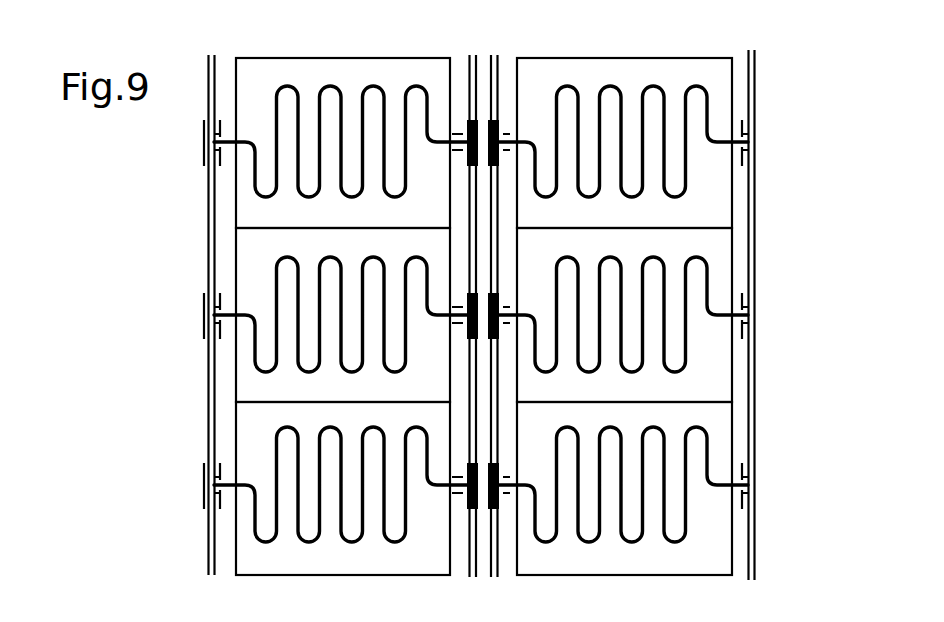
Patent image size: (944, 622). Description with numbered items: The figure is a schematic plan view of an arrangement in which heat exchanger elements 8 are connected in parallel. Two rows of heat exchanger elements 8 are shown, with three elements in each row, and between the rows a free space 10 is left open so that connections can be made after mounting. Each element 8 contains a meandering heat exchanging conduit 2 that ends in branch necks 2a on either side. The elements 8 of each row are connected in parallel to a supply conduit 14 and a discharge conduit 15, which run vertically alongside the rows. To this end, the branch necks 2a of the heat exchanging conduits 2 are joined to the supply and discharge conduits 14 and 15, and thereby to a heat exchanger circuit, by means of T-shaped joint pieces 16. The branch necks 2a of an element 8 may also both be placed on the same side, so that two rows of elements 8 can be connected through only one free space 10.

The heat exchanging conduit 2 is at (291, 86).
The branch neck 2a is at (452, 146).
The heat exchanger element 8 is at (378, 56).
The free space 10 is at (458, 538).
The supply conduit 14 is at (212, 56).
The discharge conduit 15 is at (470, 54).
The T-shaped joint piece 16 is at (206, 313).